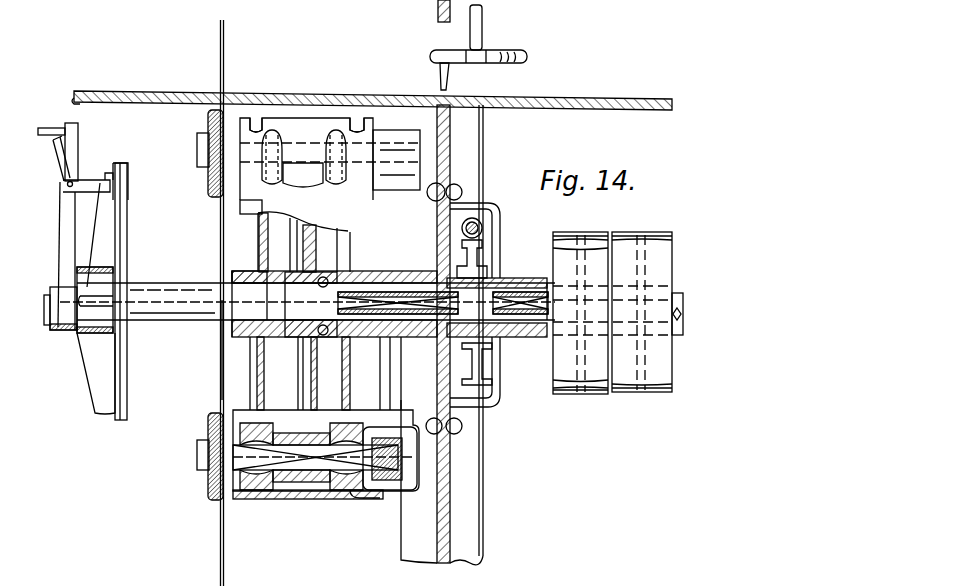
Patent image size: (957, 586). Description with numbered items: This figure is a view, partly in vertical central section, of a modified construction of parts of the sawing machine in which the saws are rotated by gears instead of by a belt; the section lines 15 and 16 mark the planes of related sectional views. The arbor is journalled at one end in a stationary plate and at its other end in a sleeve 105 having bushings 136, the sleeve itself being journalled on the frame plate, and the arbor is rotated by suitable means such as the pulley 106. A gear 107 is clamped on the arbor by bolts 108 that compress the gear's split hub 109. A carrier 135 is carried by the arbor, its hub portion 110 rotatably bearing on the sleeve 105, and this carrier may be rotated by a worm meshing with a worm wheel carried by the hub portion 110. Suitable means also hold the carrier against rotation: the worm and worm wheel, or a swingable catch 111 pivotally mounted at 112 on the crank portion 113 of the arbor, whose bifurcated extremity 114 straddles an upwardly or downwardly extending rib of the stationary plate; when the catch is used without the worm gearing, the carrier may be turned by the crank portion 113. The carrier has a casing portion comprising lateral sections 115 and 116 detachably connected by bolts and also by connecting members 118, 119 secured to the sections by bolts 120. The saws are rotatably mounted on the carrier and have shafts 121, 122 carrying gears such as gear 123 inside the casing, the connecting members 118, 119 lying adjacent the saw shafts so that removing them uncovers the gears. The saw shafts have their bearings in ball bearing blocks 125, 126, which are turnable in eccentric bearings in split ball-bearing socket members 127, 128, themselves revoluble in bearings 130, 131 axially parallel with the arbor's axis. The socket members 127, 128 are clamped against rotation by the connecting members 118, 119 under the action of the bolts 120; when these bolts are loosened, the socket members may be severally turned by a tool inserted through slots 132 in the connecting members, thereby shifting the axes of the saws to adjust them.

The section line 15 is at (72, 101).
The section line 16 is at (392, 290).
The swingable catch 111 is at (65, 183).
The pivot 112 is at (72, 182).
The bifurcated extremity 114 is at (130, 186).
The crank portion 113 is at (63, 240).
The bolts 120 is at (333, 128).
The slots 132 is at (256, 122).
The connecting member 118 is at (322, 140).
The shaft 121 is at (252, 192).
The lateral section 115 is at (292, 218).
The lateral section 116 is at (345, 232).
The gear 107 is at (295, 232).
The bolts 108 is at (323, 276).
The hub portion 110 is at (372, 275).
The sleeve 105 is at (412, 275).
The split hub 109 is at (296, 334).
The bushings 136 is at (370, 322).
The pulley 106 is at (580, 232).
The bearing 130 is at (298, 384).
The split ball-bearing socket member 127 is at (250, 405).
The carrier 135 is at (380, 368).
The bearing 131 is at (360, 385).
The split ball-bearing socket member 128 is at (388, 382).
The shaft 122 is at (326, 450).
The gear 123 is at (270, 492).
The ball bearing block 125 is at (256, 492).
The connecting member 119 is at (296, 492).
The ball bearing block 126 is at (375, 490).